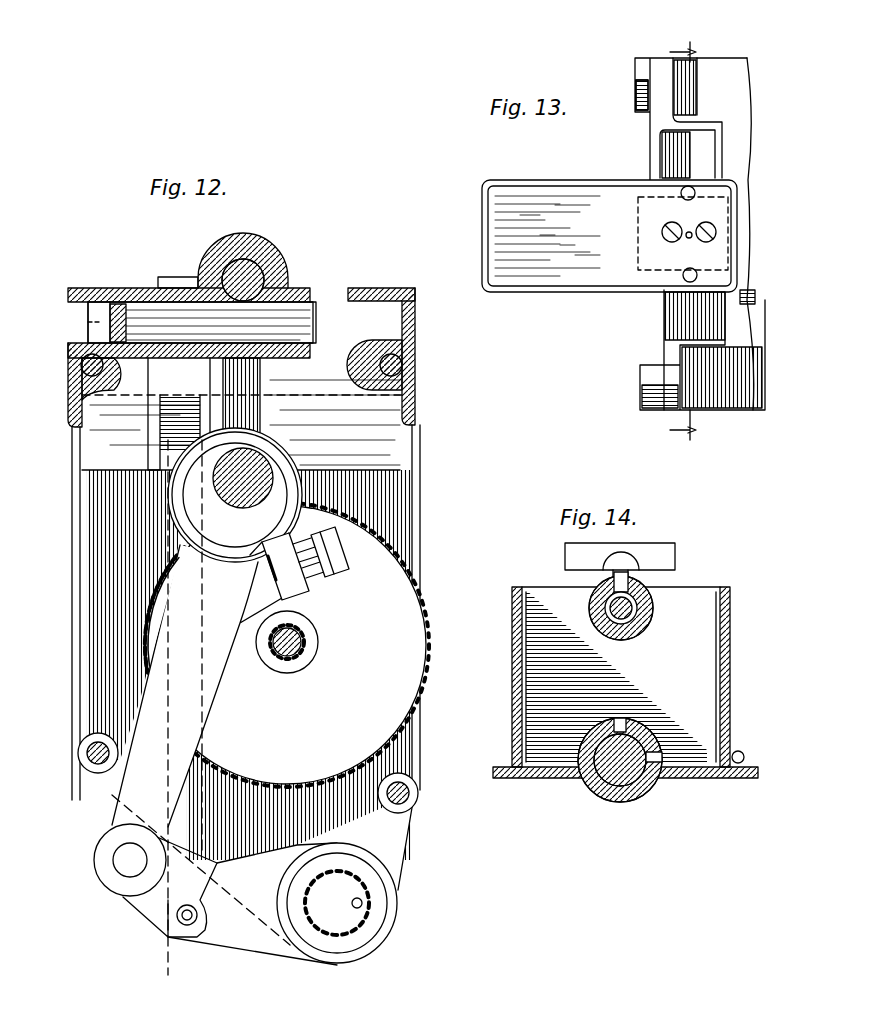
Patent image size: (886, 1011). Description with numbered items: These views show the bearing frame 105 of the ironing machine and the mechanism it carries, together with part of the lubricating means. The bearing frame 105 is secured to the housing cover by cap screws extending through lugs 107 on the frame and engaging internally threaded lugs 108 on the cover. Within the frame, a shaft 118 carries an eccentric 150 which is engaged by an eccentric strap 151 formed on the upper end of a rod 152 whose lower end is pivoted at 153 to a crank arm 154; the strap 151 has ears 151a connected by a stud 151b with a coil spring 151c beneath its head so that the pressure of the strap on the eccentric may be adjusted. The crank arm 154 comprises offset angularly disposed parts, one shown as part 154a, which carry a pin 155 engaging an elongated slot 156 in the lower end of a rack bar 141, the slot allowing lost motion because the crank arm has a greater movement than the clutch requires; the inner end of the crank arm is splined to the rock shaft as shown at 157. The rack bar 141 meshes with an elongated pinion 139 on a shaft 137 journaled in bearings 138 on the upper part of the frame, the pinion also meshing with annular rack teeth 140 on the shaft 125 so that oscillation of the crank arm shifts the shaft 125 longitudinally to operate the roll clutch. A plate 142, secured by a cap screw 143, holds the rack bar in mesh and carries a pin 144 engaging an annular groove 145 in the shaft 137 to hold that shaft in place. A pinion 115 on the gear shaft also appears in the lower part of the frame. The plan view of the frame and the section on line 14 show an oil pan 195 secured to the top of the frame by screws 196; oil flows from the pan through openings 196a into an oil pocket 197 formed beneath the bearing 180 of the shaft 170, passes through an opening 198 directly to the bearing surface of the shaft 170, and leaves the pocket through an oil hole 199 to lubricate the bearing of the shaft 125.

In FIG. 12, the bearing frame 105 is at (422, 480).
In FIG. 12, the lugs 107 is at (410, 803).
In FIG. 13, the lugs 107 is at (642, 388).
In FIG. 12, the internally threaded lugs 108 is at (410, 792).
In FIG. 12, the pinion 115 is at (318, 642).
In FIG. 12, the shaft 118 is at (265, 480).
In FIG. 12, the shaft 125 is at (250, 270).
In FIG. 12, the shaft 137 is at (312, 330).
In FIG. 12, the bearings 138 is at (305, 290).
In FIG. 12, the elongated pinion 139 is at (153, 320).
In FIG. 12, the annular rack teeth 140 is at (232, 268).
In FIG. 12, the rack bar 141 is at (165, 422).
In FIG. 12, the plate 142 is at (130, 390).
In FIG. 12, the cap screw 143 is at (110, 365).
In FIG. 12, the pin 144 is at (113, 320).
In FIG. 12, the annular groove 145 is at (88, 340).
In FIG. 12, the eccentric 150 is at (205, 510).
In FIG. 12, the eccentric strap 151 is at (175, 495).
In FIG. 12, the ears 151a is at (300, 595).
In FIG. 12, the stud 151b is at (345, 556).
In FIG. 12, the coil spring 151c is at (320, 573).
In FIG. 12, the rod 152 is at (215, 690).
In FIG. 12, the pivot 153 is at (128, 860).
In FIG. 12, the crank arm 154 is at (258, 940).
In FIG. 12, the offset part 154a is at (160, 905).
In FIG. 12, the pin 155 is at (180, 920).
In FIG. 12, the elongated slot 156 is at (180, 945).
In FIG. 12, the spline 157 is at (360, 905).
In FIG. 14, the shaft 170 is at (608, 607).
In FIG. 14, the bearing 180 is at (632, 638).
In FIG. 13, the oil pan 195 is at (500, 180).
In FIG. 14, the oil pan 195 is at (678, 553).
In FIG. 13, the screws 196 is at (700, 228).
In FIG. 14, the screws 196 is at (615, 558).
In FIG. 13, the openings 196a is at (688, 280).
In FIG. 13, the oil pocket 197 is at (682, 320).
In FIG. 14, the oil pocket 197 is at (688, 652).
In FIG. 13, the opening 198 is at (686, 240).
In FIG. 14, the opening 198 is at (614, 580).
In FIG. 14, the oil hole 199 is at (630, 725).
In FIG. 13, the section line 14— 14 is at (686, 233).